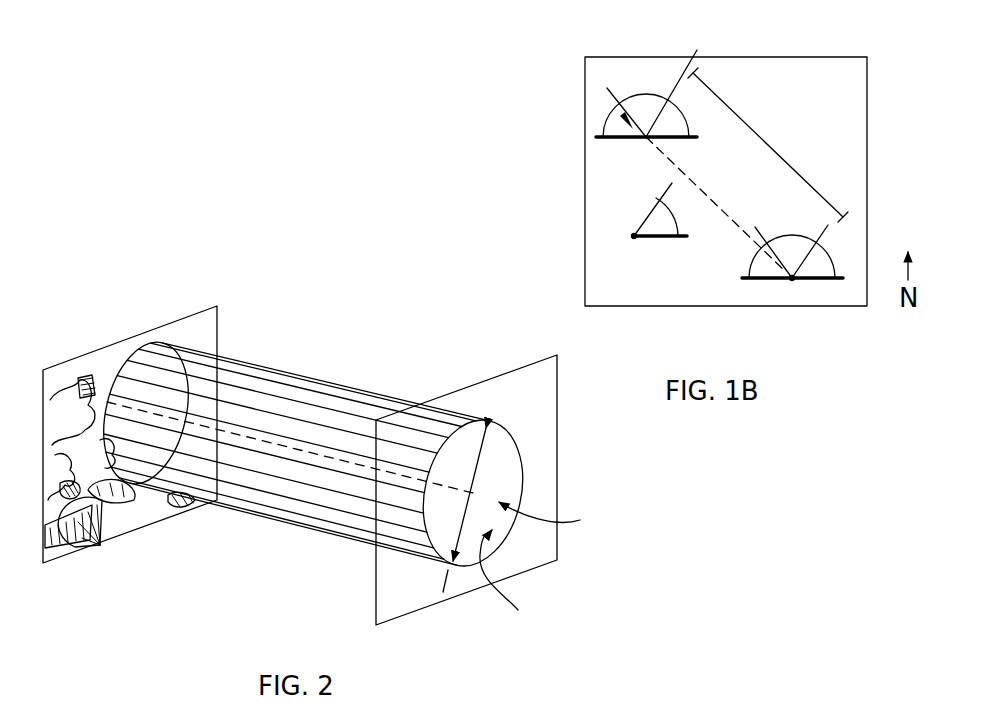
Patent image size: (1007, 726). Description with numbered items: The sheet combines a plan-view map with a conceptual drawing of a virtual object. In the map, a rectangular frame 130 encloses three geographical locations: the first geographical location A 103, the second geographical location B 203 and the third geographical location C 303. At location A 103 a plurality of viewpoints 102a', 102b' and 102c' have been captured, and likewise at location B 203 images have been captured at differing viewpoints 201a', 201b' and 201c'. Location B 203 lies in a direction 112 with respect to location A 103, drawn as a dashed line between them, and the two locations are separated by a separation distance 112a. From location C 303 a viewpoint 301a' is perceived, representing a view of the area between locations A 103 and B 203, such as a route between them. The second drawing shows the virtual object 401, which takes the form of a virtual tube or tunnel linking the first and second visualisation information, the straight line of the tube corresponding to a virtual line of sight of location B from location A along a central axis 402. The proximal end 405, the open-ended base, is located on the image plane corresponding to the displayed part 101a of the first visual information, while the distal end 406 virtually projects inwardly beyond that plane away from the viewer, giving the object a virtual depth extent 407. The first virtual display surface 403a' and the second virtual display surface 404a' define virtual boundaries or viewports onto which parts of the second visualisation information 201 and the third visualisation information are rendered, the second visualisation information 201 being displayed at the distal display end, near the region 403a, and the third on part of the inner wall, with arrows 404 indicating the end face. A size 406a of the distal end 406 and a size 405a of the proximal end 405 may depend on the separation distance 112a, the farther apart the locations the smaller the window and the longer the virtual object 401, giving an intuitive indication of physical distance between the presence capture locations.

In FIG. 1B, the coordinate frame / reference plane 130 is at (867, 153).
In FIG. 1B, the second geographical location B 203 is at (646, 137).
In FIG. 1B, the viewpoint 201a' is at (568, 112).
In FIG. 1B, the viewpoint 201b' is at (613, 80).
In FIG. 1B, the viewpoint 201c' is at (691, 80).
In FIG. 1B, the direction 112 is at (713, 202).
In FIG. 1B, the separation distance 112a is at (800, 117).
In FIG. 1B, the third geographical location C 303 is at (634, 236).
In FIG. 1B, the viewpoint 301a' is at (581, 222).
In FIG. 1B, the first geographical location A 103 is at (792, 278).
In FIG. 1B, the viewpoint 102a' is at (736, 289).
In FIG. 1B, the viewpoint 102b' is at (786, 238).
In FIG. 1B, the viewpoint 102c' is at (875, 241).
In FIG. 2, the second visualisation information 201 is at (188, 338).
In FIG. 2, the displayed part of the first visual information 101a is at (520, 400).
In FIG. 2, the virtual object 401 is at (348, 385).
In FIG. 2, the optical axis 402 is at (290, 445).
In FIG. 2, the distal end 406 is at (173, 352).
In FIG. 2, the size/dimension of the distal end 406a is at (157, 377).
In FIG. 2, the first virtual display surface 403a' is at (250, 360).
In FIG. 2, the beam ray on object plane 403a is at (181, 514).
In FIG. 2, the virtual depth extent 407 is at (253, 540).
In FIG. 2, the proximal end 405 is at (443, 535).
In FIG. 2, the size/dimension of the proximal end surface 405a is at (481, 461).
In FIG. 2, the rotation direction 404 is at (512, 590).
In FIG. 2, the second virtual display surface 404a' is at (578, 519).